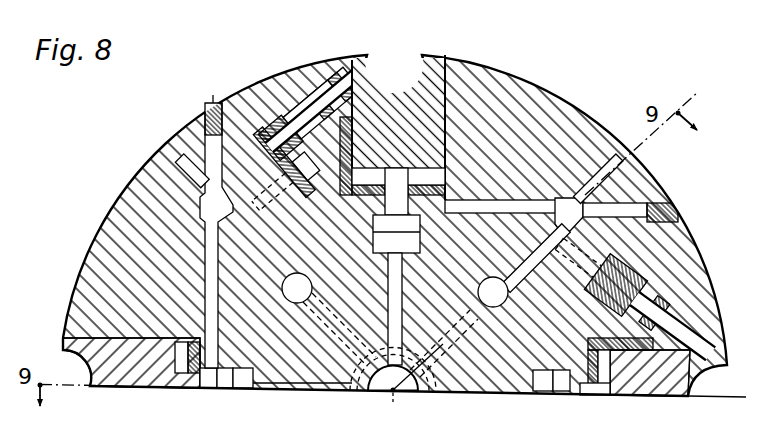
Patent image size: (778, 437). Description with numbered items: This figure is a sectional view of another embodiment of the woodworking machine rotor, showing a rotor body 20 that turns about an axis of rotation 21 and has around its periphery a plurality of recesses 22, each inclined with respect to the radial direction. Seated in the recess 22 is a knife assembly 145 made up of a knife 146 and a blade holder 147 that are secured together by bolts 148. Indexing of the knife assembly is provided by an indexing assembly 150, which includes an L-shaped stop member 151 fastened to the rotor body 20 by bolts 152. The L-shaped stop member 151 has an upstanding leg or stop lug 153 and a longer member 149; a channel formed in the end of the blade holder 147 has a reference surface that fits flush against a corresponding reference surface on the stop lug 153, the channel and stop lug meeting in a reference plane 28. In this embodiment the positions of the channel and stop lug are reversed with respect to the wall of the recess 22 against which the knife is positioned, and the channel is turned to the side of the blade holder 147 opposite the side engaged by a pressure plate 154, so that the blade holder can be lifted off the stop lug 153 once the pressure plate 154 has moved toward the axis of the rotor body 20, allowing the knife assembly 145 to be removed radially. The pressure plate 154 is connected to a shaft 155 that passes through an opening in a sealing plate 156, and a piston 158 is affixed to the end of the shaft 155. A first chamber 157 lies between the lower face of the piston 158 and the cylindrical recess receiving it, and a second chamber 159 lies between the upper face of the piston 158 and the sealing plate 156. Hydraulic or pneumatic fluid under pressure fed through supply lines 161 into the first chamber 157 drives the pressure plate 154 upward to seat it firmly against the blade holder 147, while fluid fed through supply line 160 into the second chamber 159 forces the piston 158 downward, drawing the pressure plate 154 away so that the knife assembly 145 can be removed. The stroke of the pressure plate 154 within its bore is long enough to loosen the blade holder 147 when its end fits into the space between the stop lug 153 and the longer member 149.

The rotor body 20 is at (404, 226).
The axis of rotation 21 is at (396, 391).
The recess 22 is at (667, 290).
The reference plane 28 is at (262, 113).
The knife assembly 145 is at (327, 140).
The knife 146 is at (346, 75).
The blade holder 147 is at (362, 60).
The bolts 148 is at (300, 87).
The longer member 149 is at (262, 148).
The indexing assembly 150 is at (278, 153).
The L-shaped stop member 151 is at (258, 143).
The bolts 152 is at (270, 183).
The stop lug 153 is at (288, 83).
The pressure plate 154 is at (392, 127).
The shaft 155 is at (400, 170).
The sealing plate 156 is at (387, 216).
The first chamber 157 is at (426, 309).
The piston 158 is at (420, 225).
The second chamber 159 is at (436, 188).
The supply line 160 is at (500, 210).
The supply lines 161 is at (397, 273).